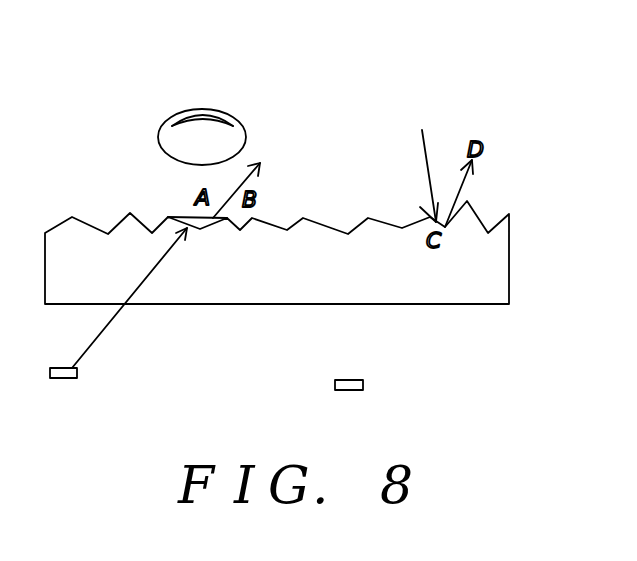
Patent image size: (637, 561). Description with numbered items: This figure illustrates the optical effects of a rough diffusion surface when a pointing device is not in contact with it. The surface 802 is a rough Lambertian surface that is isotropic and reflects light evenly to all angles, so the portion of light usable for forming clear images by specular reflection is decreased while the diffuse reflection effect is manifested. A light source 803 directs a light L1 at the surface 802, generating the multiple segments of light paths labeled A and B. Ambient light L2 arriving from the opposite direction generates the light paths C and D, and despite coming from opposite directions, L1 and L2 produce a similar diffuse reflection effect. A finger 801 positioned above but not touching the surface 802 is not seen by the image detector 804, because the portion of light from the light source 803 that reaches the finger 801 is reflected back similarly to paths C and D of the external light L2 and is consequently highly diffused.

The finger 801 is at (225, 110).
The surface 802 is at (85, 222).
The light source 803 is at (72, 380).
The image detector 804 is at (358, 390).
The light L1 is at (129, 298).
The ambient light L2 is at (421, 161).